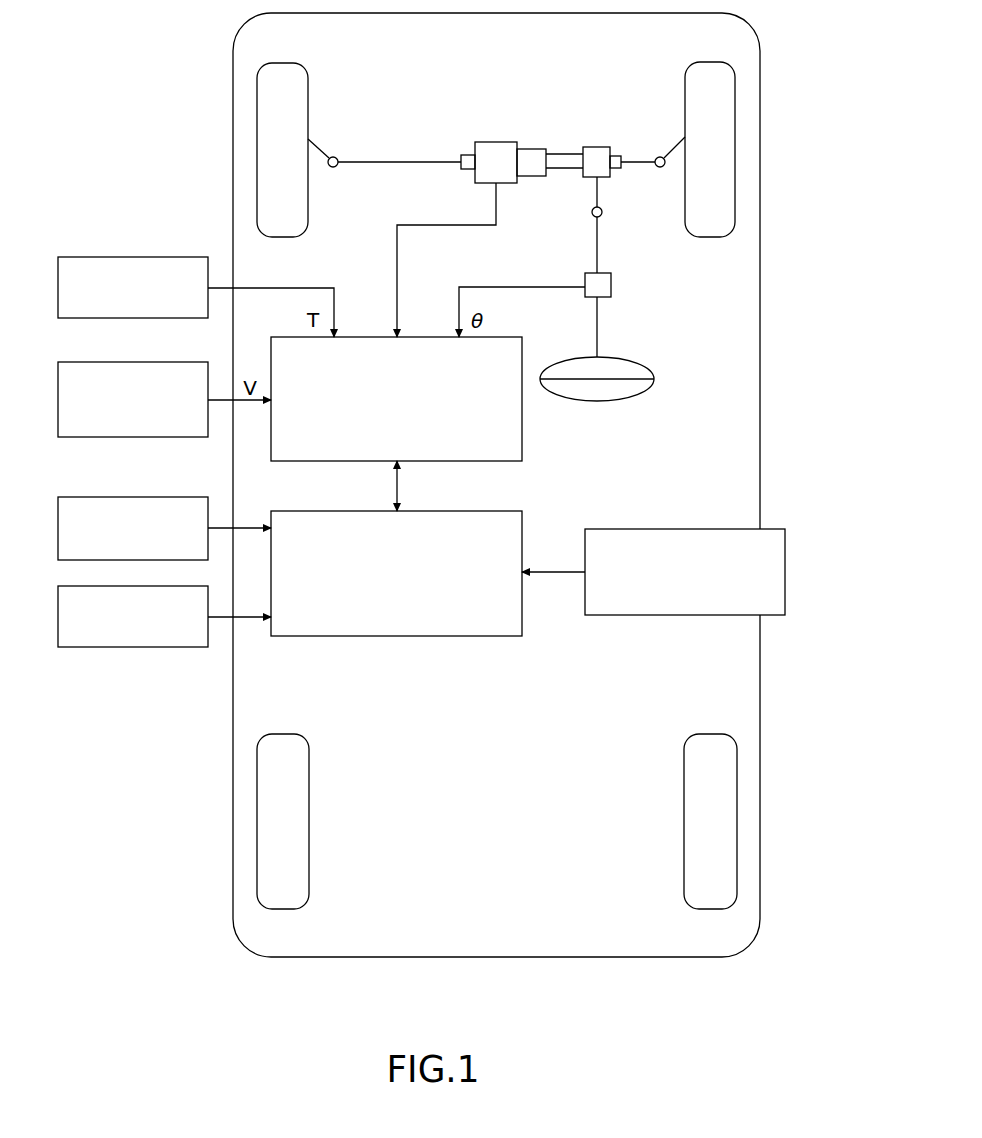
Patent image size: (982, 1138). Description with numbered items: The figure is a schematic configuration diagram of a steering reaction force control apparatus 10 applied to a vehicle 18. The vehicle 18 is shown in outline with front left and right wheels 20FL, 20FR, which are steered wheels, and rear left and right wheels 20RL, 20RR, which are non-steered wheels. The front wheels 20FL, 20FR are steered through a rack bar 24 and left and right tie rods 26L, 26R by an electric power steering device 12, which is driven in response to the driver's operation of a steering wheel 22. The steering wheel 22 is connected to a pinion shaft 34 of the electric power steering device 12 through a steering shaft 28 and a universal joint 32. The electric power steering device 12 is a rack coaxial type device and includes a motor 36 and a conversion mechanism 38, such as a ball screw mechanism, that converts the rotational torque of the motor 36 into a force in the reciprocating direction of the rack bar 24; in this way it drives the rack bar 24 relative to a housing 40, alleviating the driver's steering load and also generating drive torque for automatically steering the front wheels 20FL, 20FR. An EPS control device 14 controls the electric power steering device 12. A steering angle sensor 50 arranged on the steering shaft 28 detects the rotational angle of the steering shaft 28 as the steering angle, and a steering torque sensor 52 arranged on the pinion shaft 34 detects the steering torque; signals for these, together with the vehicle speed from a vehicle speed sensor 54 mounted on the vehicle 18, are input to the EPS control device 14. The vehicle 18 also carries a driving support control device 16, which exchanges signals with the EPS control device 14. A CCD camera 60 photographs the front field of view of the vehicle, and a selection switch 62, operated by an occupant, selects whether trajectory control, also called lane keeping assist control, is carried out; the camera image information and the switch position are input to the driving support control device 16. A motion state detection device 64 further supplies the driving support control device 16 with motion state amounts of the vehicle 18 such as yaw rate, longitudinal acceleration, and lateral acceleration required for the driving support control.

The steering reaction force control apparatus 10 is at (392, 82).
The electric power steering device 12 is at (540, 143).
The EPS control device 14 is at (385, 436).
The driving support control device 16 is at (385, 608).
The vehicle 18 is at (760, 443).
The front left wheel 20FL is at (257, 162).
The front right wheel 20FR is at (735, 160).
The rear left wheel 20RL is at (257, 828).
The rear right wheel 20RR is at (737, 828).
The steering wheel 22 is at (617, 401).
The rack bar 24 is at (391, 160).
The left tie rod 26L is at (325, 152).
The right tie rod 26R is at (682, 140).
The steering shaft 28 is at (597, 325).
The universal joint 32 is at (592, 217).
The pinion shaft 34 is at (600, 197).
The motor 36 is at (496, 142).
The conversion mechanism 38 is at (533, 177).
The housing 40 is at (466, 172).
The steering angle sensor 50 is at (611, 285).
The steering torque sensor 52 is at (135, 257).
The vehicle speed sensor 54 is at (58, 412).
The CCD camera 60 is at (58, 540).
The selection switch 62 is at (58, 622).
The motion state detection device 64 is at (684, 615).